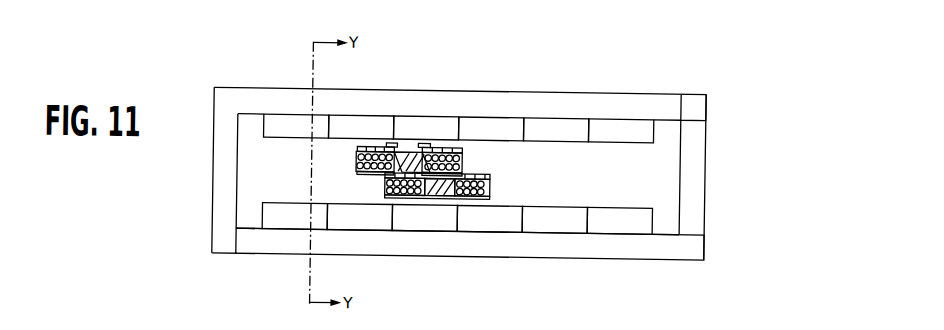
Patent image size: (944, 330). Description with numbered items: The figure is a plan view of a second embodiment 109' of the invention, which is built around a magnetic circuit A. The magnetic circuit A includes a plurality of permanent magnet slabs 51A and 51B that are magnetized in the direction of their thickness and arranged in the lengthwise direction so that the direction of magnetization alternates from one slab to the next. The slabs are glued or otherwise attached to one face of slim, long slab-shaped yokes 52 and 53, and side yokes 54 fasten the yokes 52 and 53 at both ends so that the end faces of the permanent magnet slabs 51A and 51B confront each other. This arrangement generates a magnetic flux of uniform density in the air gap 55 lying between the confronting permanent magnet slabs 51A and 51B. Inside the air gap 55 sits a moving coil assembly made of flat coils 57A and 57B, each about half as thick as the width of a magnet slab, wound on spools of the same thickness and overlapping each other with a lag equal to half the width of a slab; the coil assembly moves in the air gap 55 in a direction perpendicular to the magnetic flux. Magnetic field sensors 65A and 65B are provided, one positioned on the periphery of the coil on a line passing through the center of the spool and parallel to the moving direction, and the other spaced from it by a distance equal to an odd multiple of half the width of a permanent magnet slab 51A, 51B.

The permanent magnet slab 51A is at (282, 127).
The permanent magnet slab 51B is at (351, 124).
The slab-shaped yoke 52 is at (676, 105).
The slab-shaped yoke 53 is at (658, 251).
The side yoke 54 is at (222, 182).
The air gap 55 is at (597, 171).
The flat coil 57A is at (463, 160).
The flat coil 57B is at (490, 187).
The magnetic field sensor 65A is at (390, 144).
The magnetic field sensor 65B is at (429, 146).
The magnetic circuit A is at (618, 63).
The second embodiment 109' is at (784, 75).